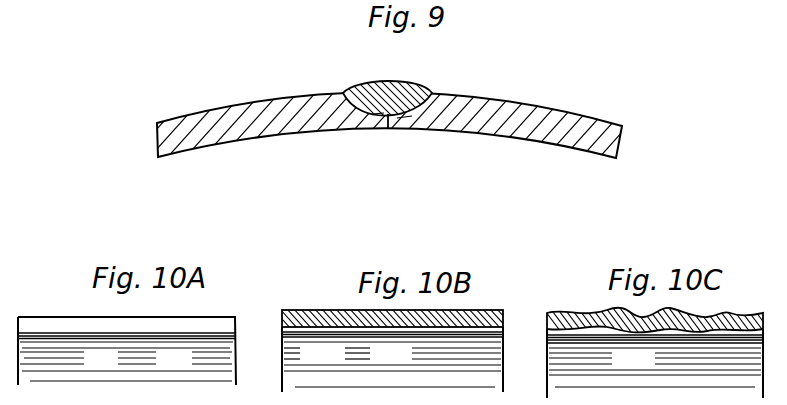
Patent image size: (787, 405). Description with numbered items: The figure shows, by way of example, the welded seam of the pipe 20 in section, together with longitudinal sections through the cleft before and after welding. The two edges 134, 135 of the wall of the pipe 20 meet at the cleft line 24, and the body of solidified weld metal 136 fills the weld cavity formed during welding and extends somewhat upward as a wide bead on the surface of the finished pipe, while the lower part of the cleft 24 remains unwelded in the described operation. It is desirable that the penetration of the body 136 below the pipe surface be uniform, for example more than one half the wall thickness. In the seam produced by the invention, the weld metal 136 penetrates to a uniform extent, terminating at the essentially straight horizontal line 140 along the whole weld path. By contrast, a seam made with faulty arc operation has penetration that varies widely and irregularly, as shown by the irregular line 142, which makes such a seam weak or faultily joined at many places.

In FIG. 9, the pipe 20 is at (540, 116).
In FIG. 10A, the pipe 20 is at (98, 327).
In FIG. 9, the cleft line 24 is at (388, 128).
In FIG. 10A, the cleft line 24 is at (168, 318).
In FIG. 9, the edge of the pipe wall 134 is at (379, 119).
In FIG. 9, the edge of the pipe wall 135 is at (412, 122).
In FIG. 9, the body of solidified weld metal 136 is at (398, 89).
In FIG. 10B, the body of solidified weld metal 136 is at (315, 318).
In FIG. 10B, the straight horizontal line 140 is at (372, 332).
In FIG. 10C, the irregular line 142 is at (625, 332).